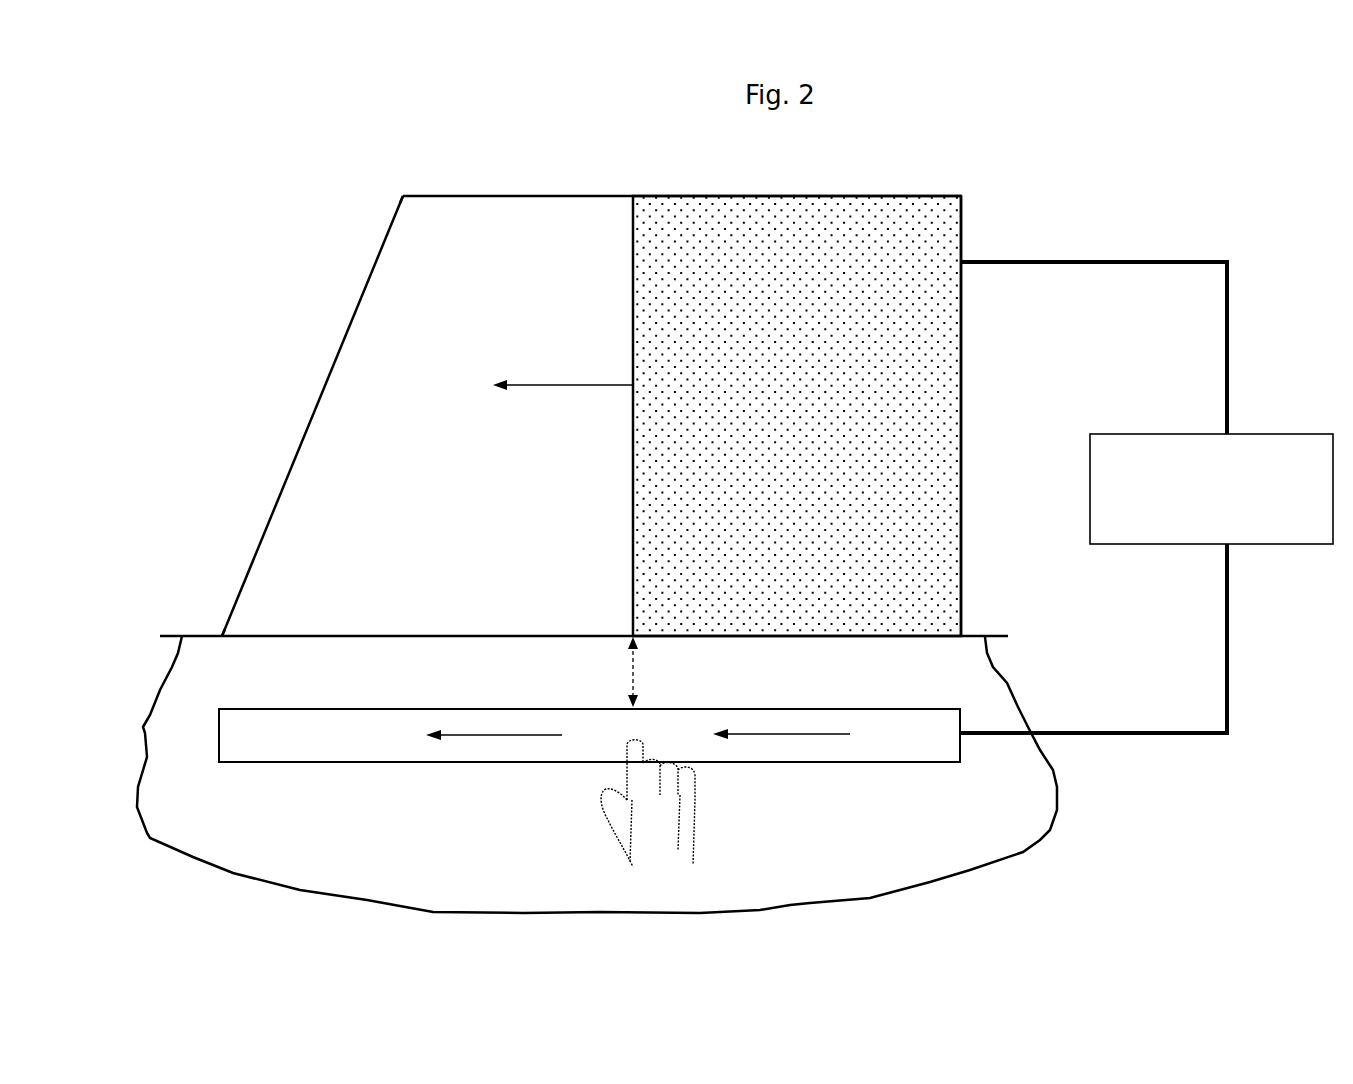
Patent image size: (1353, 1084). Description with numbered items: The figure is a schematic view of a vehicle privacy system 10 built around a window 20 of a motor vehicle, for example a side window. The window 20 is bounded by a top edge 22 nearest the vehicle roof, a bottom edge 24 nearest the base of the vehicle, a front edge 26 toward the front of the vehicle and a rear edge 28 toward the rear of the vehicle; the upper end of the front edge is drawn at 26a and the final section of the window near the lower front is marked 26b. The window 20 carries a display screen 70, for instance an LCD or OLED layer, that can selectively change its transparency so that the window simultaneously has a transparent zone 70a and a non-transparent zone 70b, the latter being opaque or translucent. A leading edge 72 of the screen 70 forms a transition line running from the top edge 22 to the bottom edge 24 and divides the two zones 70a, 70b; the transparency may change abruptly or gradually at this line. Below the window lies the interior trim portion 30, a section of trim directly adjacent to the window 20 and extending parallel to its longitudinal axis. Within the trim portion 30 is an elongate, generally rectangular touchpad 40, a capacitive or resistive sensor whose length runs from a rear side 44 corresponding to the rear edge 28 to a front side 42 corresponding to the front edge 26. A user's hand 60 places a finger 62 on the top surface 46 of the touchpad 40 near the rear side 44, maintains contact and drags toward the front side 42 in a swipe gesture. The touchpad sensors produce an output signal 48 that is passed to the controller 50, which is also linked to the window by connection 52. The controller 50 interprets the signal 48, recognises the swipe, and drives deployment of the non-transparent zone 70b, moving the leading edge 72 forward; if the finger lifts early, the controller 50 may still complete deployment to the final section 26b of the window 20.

The privacy system 10 is at (235, 166).
The window 20 is at (654, 186).
The top edge 22 is at (452, 196).
The bottom edge 24 is at (460, 636).
The front edge 26 is at (295, 455).
The upper end of side edge 26a is at (404, 197).
The final section 26b is at (216, 640).
The rear edge 28 is at (962, 385).
The interior trim portion 30 is at (160, 728).
The touchpad 40 is at (395, 775).
The front side 42 is at (218, 735).
The rear side 44 is at (962, 750).
The top surface 46 is at (901, 751).
The output signal 48 is at (1227, 667).
The controller 50 is at (1283, 434).
The connection line 52 is at (1140, 262).
The hand 60 is at (672, 837).
The finger 62 is at (636, 752).
The display screen 70 is at (918, 213).
The transparent zone 70a is at (535, 214).
The non-transparent zone 70b is at (770, 213).
The leading edge 72 is at (633, 480).